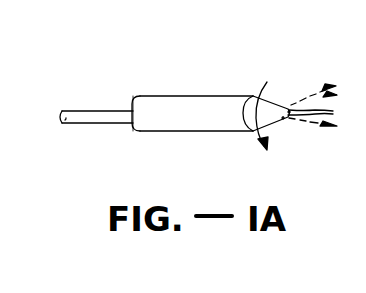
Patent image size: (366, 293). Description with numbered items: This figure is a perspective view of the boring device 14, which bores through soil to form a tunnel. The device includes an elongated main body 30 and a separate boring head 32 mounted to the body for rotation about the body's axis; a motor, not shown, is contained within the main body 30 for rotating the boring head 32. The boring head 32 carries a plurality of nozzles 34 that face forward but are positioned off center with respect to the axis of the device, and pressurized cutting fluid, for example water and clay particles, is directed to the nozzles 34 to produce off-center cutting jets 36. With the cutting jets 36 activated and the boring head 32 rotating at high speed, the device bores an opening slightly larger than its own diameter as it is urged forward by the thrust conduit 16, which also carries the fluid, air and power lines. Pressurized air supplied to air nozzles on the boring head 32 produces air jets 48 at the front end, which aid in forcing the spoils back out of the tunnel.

The boring device 14 is at (192, 78).
The thrust conduit 16 is at (104, 118).
The main body 30 is at (198, 131).
The boring head 32 is at (275, 132).
The nozzles 34 is at (323, 115).
The cutting jets 36 is at (320, 99).
The air jets 48 is at (318, 123).